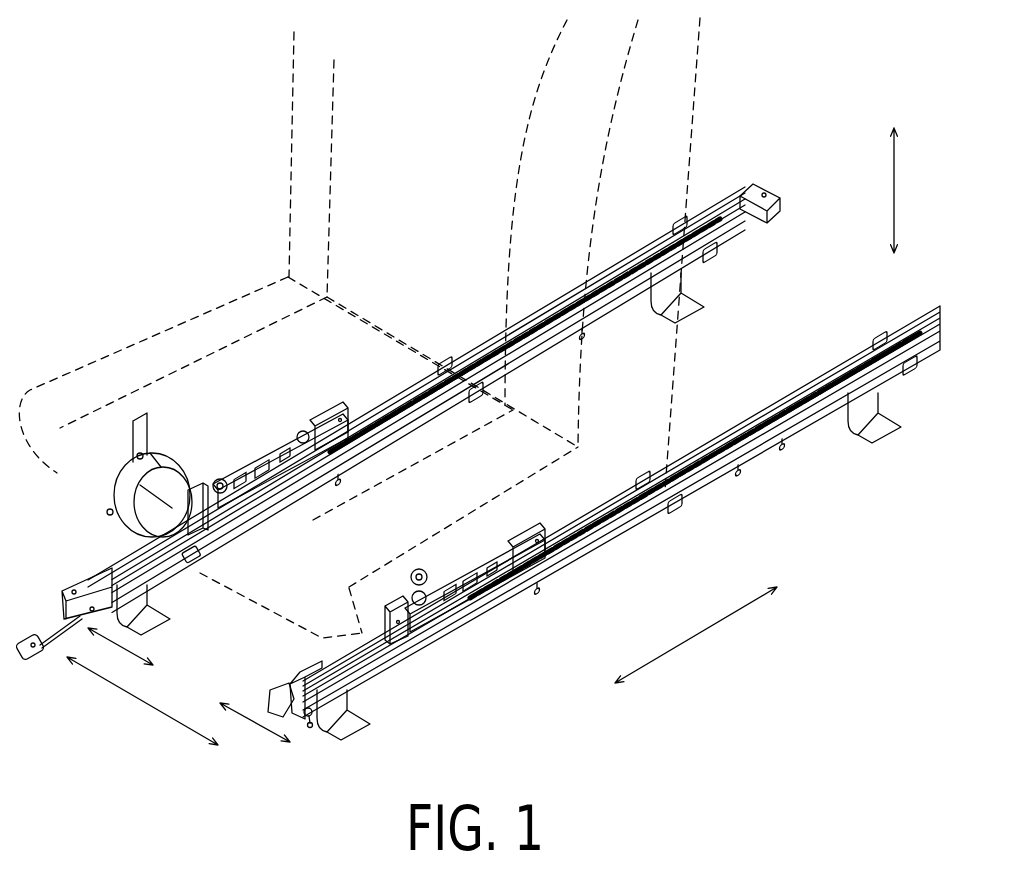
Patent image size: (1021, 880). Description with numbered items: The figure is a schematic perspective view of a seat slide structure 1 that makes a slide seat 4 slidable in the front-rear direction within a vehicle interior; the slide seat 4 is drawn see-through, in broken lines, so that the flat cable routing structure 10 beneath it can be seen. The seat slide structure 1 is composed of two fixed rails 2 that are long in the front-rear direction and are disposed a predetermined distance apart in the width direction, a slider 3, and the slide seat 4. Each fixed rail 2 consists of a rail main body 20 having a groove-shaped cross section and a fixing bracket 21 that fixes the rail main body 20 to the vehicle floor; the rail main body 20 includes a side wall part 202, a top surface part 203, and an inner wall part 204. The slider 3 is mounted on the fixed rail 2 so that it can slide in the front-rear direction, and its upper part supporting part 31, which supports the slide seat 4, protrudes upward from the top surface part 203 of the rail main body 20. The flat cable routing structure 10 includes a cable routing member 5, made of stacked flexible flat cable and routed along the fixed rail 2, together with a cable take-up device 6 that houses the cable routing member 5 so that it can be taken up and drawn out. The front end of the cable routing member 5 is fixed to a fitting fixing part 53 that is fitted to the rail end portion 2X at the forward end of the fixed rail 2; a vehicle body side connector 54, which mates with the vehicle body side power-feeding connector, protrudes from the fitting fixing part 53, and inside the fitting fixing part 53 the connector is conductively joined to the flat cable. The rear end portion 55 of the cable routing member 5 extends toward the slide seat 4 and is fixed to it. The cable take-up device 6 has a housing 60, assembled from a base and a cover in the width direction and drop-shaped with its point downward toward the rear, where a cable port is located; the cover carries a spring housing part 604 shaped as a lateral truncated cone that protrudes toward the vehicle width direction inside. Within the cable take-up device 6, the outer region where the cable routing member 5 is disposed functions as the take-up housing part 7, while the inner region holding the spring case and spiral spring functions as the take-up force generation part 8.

The seat slide structure 1 is at (782, 122).
The fixed rail 2 is at (708, 211).
The rail main body 20 is at (471, 341).
The side wall part 202 is at (455, 628).
The fixing bracket 21 is at (687, 302).
The slider 3 is at (277, 440).
The upper part supporting part 31 is at (333, 409).
The slide seat 4 is at (312, 143).
The cable routing member 5 is at (192, 556).
The cable take-up device 6 is at (182, 467).
The take-up housing part 7 is at (117, 497).
The take-up force generation part 8 is at (210, 484).
The flat cable routing structure 10 is at (105, 465).
The rail end portion 2X is at (92, 558).
The fitting fixing part 53 is at (80, 597).
The vehicle body side connector 54 is at (37, 647).
The rear end portion 55 is at (145, 432).
The housing 60 is at (172, 443).
The spring housing part 604 is at (181, 486).
The top surface part 203 is at (300, 688).
The inner wall part 204 is at (340, 668).